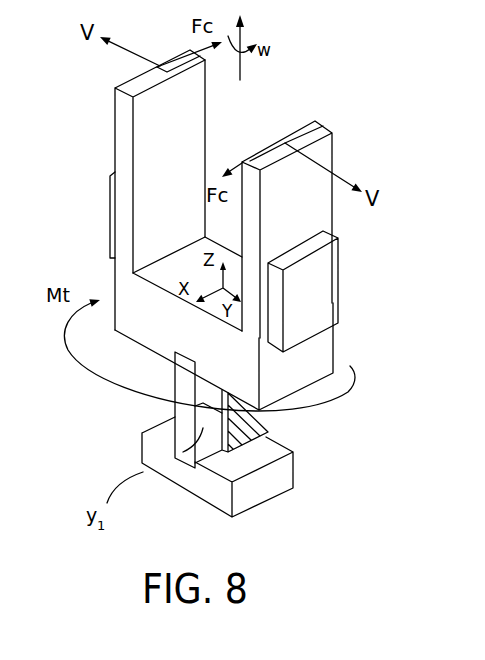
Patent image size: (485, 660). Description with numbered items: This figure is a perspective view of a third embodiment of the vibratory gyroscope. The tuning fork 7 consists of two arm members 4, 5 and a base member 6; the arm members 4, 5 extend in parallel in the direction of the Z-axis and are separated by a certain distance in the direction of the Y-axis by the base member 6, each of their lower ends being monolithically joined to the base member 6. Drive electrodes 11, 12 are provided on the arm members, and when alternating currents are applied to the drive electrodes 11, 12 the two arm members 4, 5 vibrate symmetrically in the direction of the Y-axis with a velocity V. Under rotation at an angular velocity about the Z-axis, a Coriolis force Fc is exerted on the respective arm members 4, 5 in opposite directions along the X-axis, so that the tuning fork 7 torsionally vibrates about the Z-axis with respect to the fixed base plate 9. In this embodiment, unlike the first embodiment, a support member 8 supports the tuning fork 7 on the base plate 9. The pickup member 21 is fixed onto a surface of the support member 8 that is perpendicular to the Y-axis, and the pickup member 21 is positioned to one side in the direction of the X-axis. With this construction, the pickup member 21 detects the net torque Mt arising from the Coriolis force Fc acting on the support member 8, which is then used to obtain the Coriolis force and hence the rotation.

The arm member 4 is at (303, 213).
The arm member 5 is at (127, 133).
The base member 6 is at (130, 305).
The tuning fork 7 is at (214, 96).
The support member 8 is at (175, 432).
The base plate 9 is at (278, 475).
The drive electrode 11 is at (313, 275).
The drive electrode 12 is at (110, 232).
The pickup member 21 is at (265, 420).